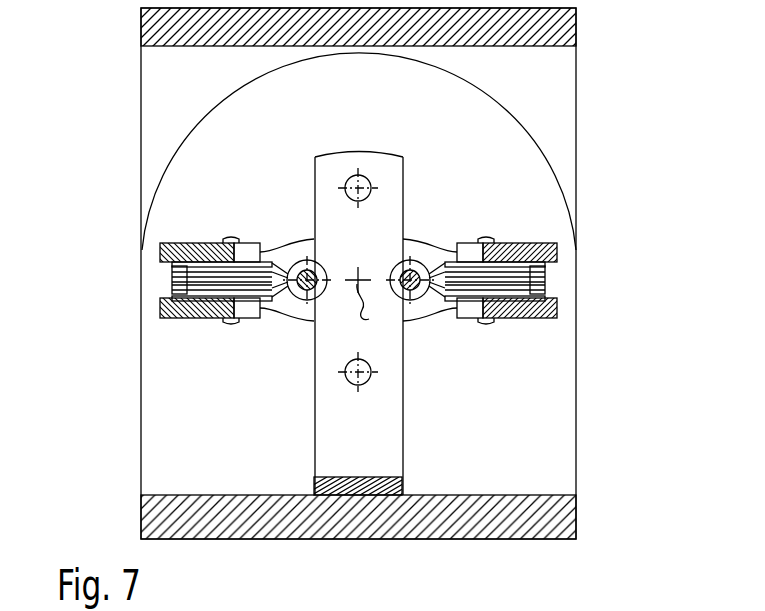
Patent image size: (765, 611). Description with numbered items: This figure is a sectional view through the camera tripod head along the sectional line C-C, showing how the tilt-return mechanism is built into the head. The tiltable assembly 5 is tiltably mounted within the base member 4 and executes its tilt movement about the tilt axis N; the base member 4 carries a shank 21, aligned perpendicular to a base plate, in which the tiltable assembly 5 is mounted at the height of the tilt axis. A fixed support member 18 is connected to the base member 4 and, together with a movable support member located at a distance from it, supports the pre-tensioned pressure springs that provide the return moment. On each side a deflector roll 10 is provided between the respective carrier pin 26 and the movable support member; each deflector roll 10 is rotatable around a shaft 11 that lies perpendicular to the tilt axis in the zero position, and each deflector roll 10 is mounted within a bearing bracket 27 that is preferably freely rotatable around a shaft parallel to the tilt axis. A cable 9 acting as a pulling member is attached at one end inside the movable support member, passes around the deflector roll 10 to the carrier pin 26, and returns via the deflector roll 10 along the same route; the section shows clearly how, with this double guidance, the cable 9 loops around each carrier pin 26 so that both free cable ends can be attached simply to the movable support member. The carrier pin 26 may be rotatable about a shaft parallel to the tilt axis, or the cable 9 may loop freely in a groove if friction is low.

The base member 4 is at (576, 523).
The tiltable assembly 5 is at (577, 20).
The cable 9 is at (262, 272).
The deflector roll 10 is at (170, 285).
The shaft 11 is at (230, 237).
The fixed support member 18 is at (404, 162).
The shank 21 is at (555, 428).
The carrier pin 26 is at (420, 258).
The bearing bracket 27 is at (158, 253).